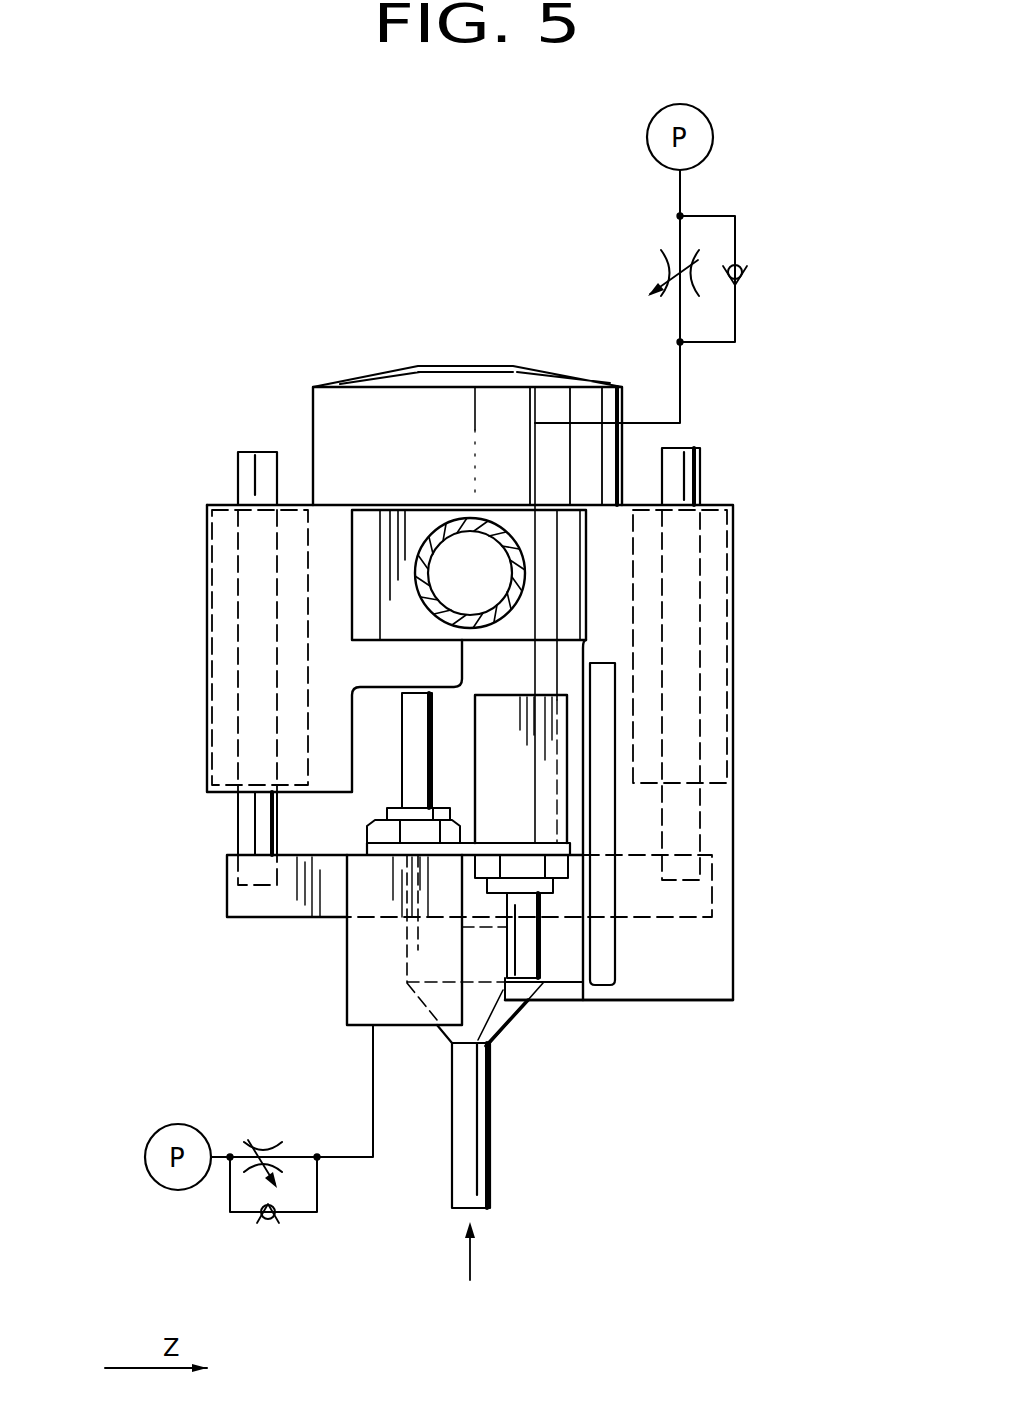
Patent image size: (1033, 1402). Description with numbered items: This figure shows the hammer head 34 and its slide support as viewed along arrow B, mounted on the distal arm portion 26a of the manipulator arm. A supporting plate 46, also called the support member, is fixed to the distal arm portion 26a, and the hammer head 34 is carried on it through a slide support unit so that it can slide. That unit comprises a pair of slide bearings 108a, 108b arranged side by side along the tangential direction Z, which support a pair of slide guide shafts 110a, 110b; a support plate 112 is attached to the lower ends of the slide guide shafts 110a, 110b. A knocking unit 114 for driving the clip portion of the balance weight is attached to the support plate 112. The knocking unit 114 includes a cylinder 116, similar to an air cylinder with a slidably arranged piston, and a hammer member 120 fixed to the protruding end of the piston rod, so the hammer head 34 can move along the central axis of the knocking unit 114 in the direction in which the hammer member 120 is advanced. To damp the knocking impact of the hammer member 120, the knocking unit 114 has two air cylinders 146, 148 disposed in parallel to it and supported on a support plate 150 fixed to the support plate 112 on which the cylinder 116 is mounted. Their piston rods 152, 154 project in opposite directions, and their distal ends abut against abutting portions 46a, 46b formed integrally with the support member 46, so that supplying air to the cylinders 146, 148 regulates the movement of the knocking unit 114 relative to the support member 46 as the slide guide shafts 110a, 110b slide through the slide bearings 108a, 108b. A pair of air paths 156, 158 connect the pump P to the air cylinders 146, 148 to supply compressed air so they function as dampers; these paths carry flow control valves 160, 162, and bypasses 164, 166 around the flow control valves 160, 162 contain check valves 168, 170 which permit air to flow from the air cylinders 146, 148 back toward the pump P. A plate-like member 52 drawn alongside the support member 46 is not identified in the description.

The distal arm portion 26a is at (458, 522).
The hammer head 34 is at (735, 968).
The supporting plate 46 is at (712, 823).
The abutting portion 46a is at (552, 992).
The abutting portion 46b is at (397, 672).
The guide plate 52 is at (617, 948).
The slide bearing 108a is at (226, 697).
The slide bearing 108b is at (718, 652).
The slide guide shaft 110a is at (246, 823).
The slide guide shaft 110b is at (700, 459).
The support plate 112 is at (232, 903).
The knocking unit 114 is at (308, 422).
The cylinder 116 is at (383, 800).
The hammer member 120 is at (490, 1178).
The air cylinder 146 is at (497, 718).
The air cylinder 148 is at (372, 985).
The support plate 150 is at (473, 840).
The piston rod 152 is at (548, 965).
The piston rod 154 is at (413, 770).
The air path 156 is at (680, 372).
The air path 158 is at (375, 1120).
The flow control valve 160 is at (652, 271).
The flow control valve 162 is at (271, 1124).
The bypass 164 is at (738, 330).
The bypass 166 is at (303, 1214).
The check valve 168 is at (745, 280).
The check valve 170 is at (274, 1232).